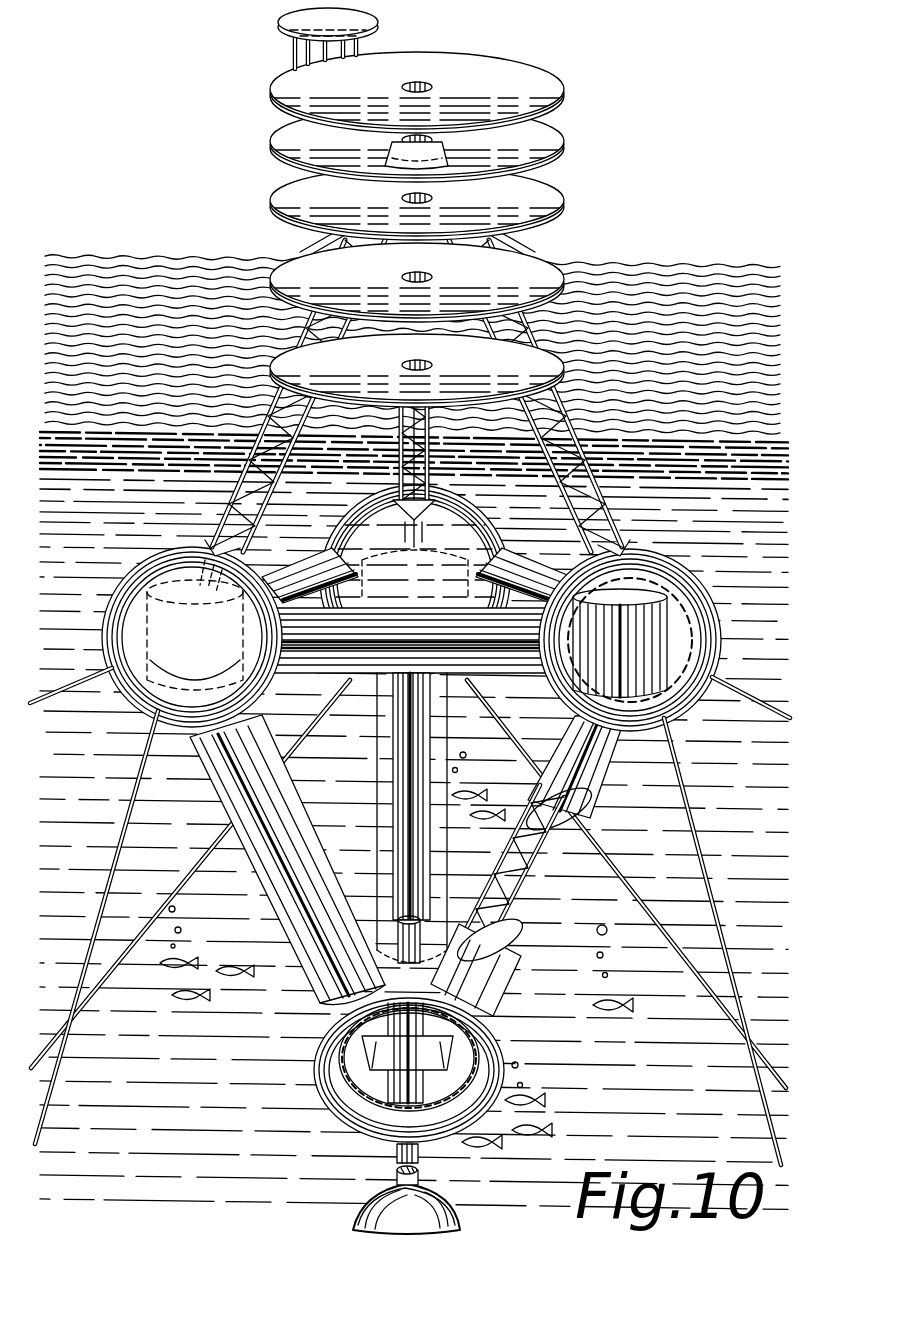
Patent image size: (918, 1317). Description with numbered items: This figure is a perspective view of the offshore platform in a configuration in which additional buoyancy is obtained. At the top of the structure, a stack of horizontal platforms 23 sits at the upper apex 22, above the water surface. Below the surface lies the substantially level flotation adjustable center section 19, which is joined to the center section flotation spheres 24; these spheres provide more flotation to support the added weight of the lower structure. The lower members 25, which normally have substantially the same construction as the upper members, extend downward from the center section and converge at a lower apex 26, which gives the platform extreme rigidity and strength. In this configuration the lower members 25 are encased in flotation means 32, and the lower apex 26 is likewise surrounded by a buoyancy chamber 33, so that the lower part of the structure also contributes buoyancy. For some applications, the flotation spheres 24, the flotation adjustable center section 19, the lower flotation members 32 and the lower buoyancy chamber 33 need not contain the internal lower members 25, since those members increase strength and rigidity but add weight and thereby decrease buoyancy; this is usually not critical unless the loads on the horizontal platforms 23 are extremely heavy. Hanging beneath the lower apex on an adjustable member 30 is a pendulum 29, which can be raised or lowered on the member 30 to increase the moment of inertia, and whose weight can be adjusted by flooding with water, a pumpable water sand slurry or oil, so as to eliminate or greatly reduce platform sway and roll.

The flotation adjustable center section 19 is at (300, 568).
The upper apex 22 is at (372, 157).
The horizontal platforms 23 is at (447, 207).
The flotation spheres 24 is at (683, 588).
The lower members 25 is at (545, 898).
The lower apex 26 is at (433, 1047).
The pendulum 29 is at (383, 1200).
The adjustable member 30 is at (395, 1153).
The flotation means 32 is at (272, 895).
The buoyancy chamber 33 is at (448, 1070).